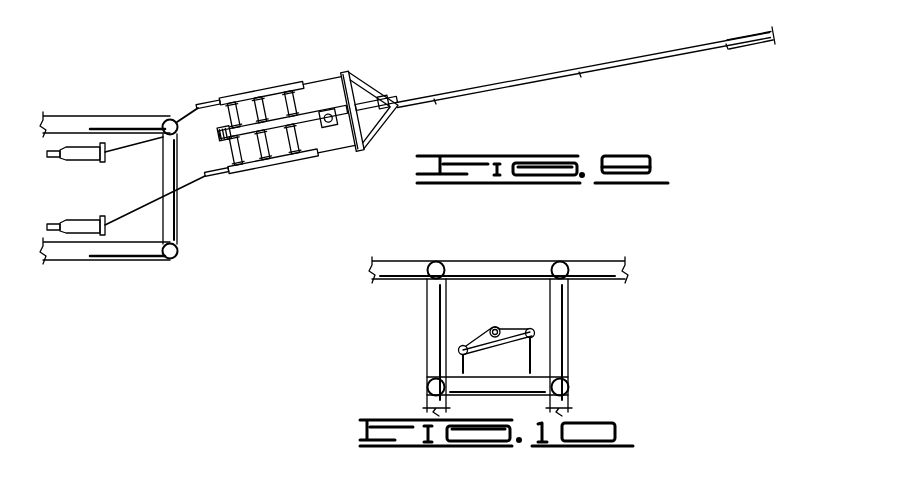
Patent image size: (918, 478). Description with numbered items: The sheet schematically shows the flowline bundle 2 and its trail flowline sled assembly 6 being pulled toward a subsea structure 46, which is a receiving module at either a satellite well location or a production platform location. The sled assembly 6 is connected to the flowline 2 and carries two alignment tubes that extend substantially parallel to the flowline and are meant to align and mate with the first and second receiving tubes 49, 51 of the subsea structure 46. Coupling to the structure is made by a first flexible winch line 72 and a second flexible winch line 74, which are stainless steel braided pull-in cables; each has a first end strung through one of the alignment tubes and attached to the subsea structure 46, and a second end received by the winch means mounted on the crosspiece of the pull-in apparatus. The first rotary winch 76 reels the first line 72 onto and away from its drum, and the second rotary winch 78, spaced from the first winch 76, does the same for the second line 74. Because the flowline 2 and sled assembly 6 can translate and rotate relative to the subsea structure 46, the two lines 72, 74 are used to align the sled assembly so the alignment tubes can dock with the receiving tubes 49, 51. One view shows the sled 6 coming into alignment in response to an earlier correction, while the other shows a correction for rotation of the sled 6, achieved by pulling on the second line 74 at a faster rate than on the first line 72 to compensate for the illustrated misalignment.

In FIG. 9, the flowline bundle 2 is at (488, 87).
In FIG. 9, the trail flowline sled assembly 6 is at (261, 89).
In FIG. 10, the subsea structure 46 is at (573, 297).
In FIG. 9, the first receiving tube 49 is at (78, 154).
In FIG. 9, the second receiving tube 51 is at (76, 222).
In FIG. 9, the first flexible winch line 72 is at (182, 116).
In FIG. 10, the first flexible winch line 72 is at (458, 360).
In FIG. 9, the second flexible winch line 74 is at (190, 184).
In FIG. 10, the second flexible winch line 74 is at (533, 362).
In FIG. 9, the first rotary winch 76 is at (344, 70).
In FIG. 9, the second rotary winch 78 is at (357, 155).